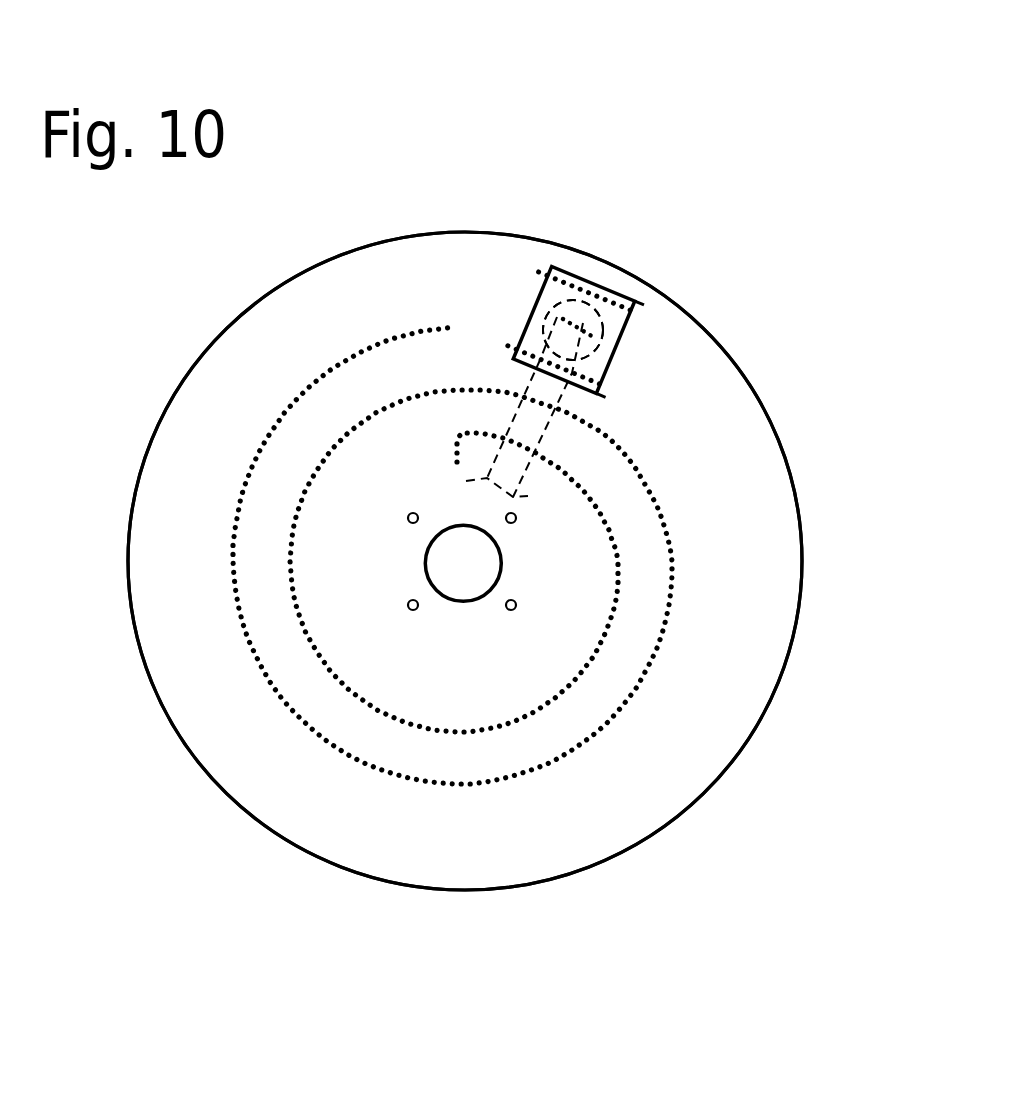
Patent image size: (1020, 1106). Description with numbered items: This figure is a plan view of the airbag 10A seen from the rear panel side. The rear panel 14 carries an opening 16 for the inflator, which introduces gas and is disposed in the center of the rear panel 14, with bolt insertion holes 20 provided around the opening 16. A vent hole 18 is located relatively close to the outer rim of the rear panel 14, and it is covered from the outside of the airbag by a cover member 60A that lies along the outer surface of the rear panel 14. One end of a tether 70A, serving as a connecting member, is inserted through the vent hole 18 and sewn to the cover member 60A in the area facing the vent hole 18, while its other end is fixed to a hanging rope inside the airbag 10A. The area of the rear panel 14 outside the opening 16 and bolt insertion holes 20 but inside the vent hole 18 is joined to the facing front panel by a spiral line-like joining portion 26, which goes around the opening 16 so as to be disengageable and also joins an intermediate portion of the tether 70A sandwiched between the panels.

The airbag 10A is at (702, 853).
The rear panel 14 is at (253, 782).
The opening 16 is at (425, 564).
The vent hole 18 is at (550, 312).
The bolt insertion holes 20 is at (409, 512).
The line-like joining portion 26 is at (672, 619).
The cover member 60A is at (622, 347).
The tether 70A is at (527, 430).